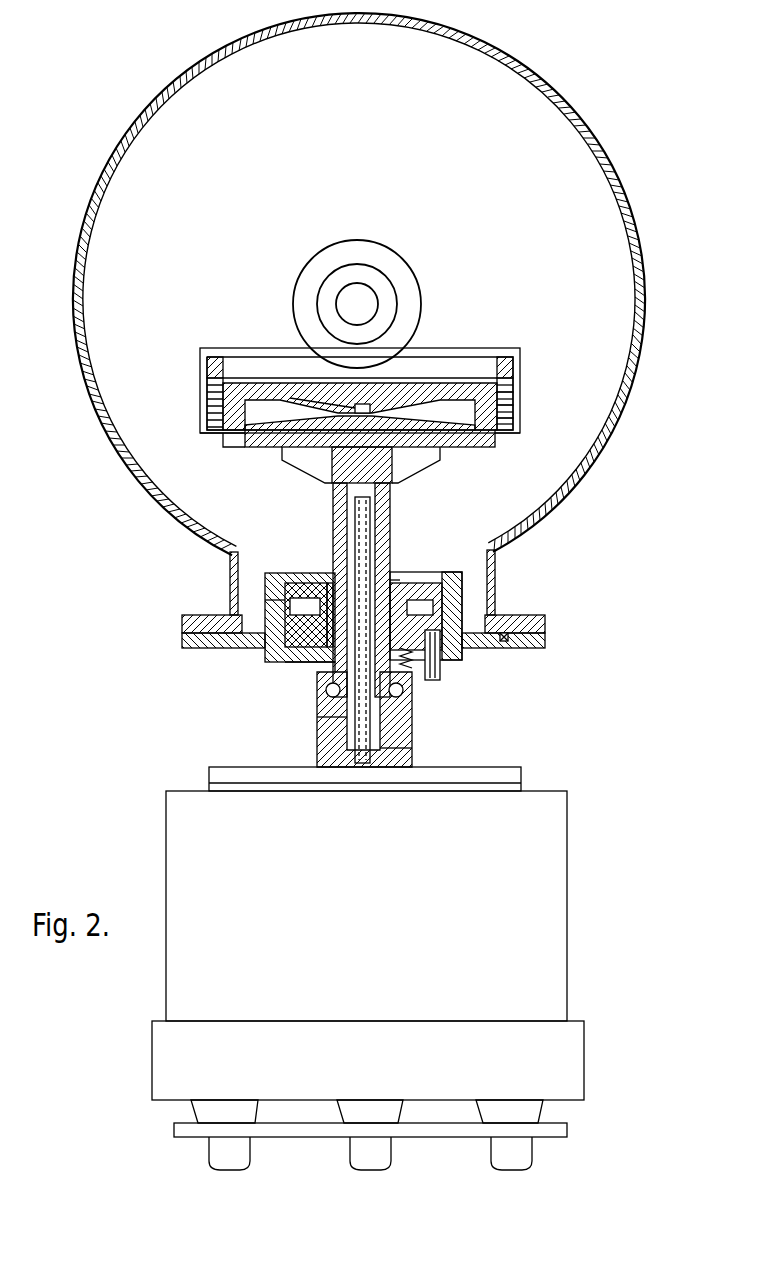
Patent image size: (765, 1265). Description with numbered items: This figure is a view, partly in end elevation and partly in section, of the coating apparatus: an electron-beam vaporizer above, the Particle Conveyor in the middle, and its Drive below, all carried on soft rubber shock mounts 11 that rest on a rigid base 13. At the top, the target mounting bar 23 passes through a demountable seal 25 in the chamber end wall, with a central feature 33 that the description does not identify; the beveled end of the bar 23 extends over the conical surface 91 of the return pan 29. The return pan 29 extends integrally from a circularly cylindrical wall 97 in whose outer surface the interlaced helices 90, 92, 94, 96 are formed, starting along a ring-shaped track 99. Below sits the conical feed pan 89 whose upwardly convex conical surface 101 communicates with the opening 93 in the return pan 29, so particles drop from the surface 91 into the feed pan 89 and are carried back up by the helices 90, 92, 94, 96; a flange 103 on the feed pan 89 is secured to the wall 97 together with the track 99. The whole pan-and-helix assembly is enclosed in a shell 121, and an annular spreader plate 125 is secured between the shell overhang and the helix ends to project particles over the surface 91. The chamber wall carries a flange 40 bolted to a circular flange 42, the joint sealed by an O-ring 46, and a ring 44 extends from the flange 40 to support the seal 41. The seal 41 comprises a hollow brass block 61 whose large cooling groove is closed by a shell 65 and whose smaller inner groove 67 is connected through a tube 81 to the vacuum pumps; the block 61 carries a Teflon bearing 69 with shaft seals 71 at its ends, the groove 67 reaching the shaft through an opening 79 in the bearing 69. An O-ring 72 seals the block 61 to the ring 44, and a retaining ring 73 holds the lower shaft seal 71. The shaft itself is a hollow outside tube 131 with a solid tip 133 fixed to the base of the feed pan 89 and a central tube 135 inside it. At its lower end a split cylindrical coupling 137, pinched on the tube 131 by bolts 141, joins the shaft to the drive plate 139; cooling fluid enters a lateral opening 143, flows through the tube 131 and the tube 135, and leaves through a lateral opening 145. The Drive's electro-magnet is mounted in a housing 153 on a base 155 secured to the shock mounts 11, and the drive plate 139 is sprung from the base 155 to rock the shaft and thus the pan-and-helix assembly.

The shock mounts 11 is at (530, 1105).
The rigid base 13 is at (560, 1128).
The target mounting bar 23 is at (386, 258).
The demountable seal 25 is at (313, 270).
The return pan 29 is at (445, 383).
The inner opening 33 is at (353, 292).
The flange 40 is at (545, 641).
The seal 41 is at (397, 578).
The circular flange 42 is at (545, 623).
The ring 44 is at (452, 584).
The O-ring 46 is at (506, 633).
The hollow cylindrical block 61 is at (310, 583).
The shell 65 is at (276, 600).
The groove 67 is at (420, 608).
The bearing 69 is at (408, 600).
The shaft seals 71 is at (330, 583).
The O-ring 72 is at (300, 582).
The retaining ring 73 is at (318, 666).
The opening 79 is at (412, 663).
The tube 81 is at (441, 673).
The feed pan 89 is at (330, 470).
The helix 90 is at (513, 422).
The conical surface 91 is at (318, 398).
The helix 92 is at (513, 410).
The opening 93 is at (362, 404).
The helix 94 is at (513, 397).
The helix 96 is at (513, 384).
The circularly cylindrical wall 97 is at (207, 399).
The ring-shaped track 99 is at (213, 435).
The conical surface 101 is at (300, 425).
The flange 103 is at (228, 447).
The shell 121 is at (513, 433).
The spreader plate 125 is at (515, 373).
The outside tube 131 is at (340, 503).
The solid tip 133 is at (398, 478).
The central tube 135 is at (357, 529).
The split cylindrical coupling 137 is at (405, 726).
The drive plate 139 is at (212, 781).
The bolts 141 is at (330, 692).
The lateral opening 143 is at (322, 720).
The lateral opening 145 is at (408, 745).
The housing 153 is at (567, 857).
The base 155 is at (583, 1051).